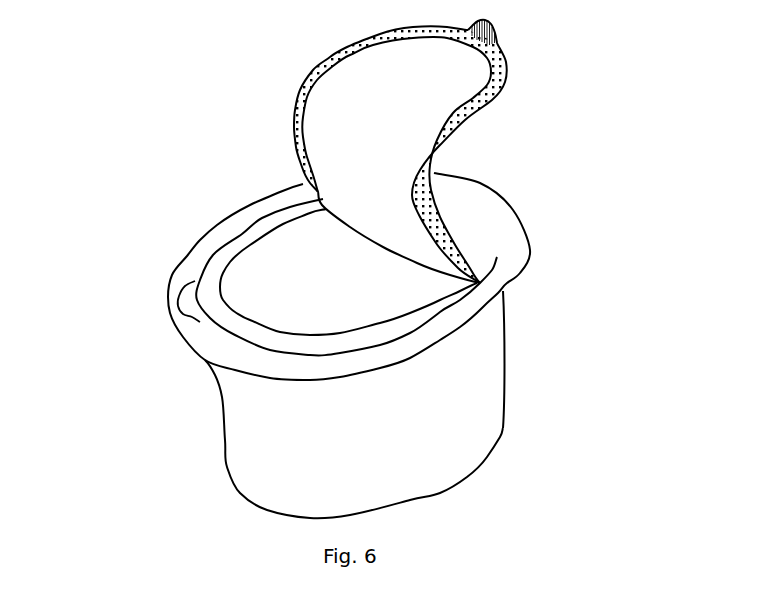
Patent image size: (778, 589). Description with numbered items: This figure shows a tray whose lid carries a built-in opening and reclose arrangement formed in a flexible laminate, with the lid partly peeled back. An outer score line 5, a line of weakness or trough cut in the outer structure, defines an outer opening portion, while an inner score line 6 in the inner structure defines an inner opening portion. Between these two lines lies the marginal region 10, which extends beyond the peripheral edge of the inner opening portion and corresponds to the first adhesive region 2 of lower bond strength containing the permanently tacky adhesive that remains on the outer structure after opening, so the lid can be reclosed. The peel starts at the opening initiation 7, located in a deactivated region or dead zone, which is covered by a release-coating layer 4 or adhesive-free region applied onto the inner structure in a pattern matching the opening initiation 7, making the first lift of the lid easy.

The first adhesive region 2 is at (314, 71).
The release-coating layer 4 is at (494, 31).
The scoring line of the outer structure 5 is at (213, 256).
The scoring line of the inner structure 6 is at (243, 234).
The opening initiation 7 is at (180, 305).
The marginal region 10 is at (433, 307).